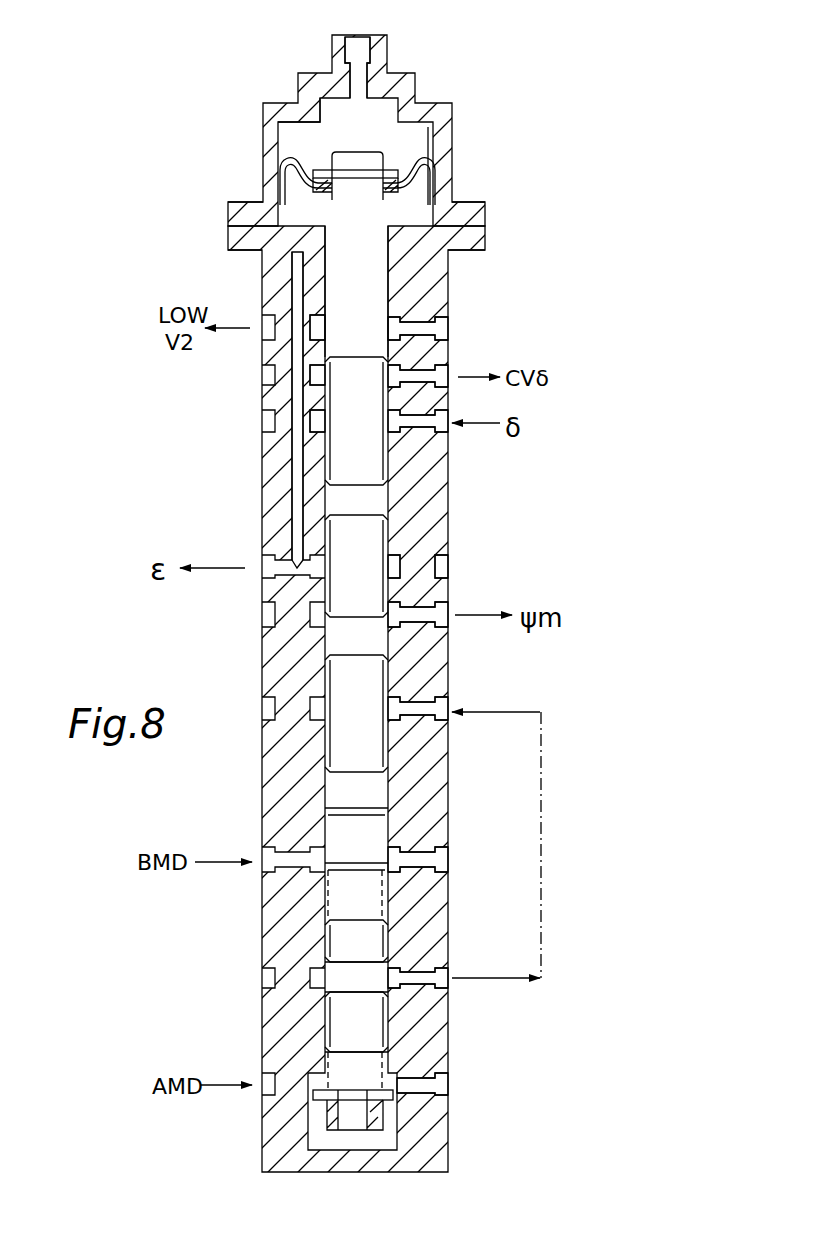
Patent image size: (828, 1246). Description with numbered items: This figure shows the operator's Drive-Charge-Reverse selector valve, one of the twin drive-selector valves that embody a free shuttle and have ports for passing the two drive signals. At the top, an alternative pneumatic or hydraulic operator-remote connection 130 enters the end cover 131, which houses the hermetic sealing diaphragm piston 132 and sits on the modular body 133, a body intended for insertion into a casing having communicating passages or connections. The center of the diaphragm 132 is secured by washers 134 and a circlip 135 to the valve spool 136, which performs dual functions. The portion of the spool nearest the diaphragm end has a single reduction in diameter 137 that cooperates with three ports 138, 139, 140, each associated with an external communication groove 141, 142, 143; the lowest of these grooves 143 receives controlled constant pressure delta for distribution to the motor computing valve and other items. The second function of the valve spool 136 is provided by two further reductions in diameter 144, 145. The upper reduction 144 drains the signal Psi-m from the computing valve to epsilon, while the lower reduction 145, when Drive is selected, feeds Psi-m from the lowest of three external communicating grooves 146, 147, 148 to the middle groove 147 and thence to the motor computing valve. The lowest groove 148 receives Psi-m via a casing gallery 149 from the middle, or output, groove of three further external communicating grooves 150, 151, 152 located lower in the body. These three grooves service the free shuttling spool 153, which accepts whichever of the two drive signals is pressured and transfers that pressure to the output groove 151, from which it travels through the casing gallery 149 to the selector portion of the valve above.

The operator-remote connection 130 is at (355, 45).
The end cover 131 is at (405, 92).
The hermetic sealing diaphragm piston 132 is at (428, 160).
The modular body 133 is at (432, 273).
The washers 134 is at (320, 197).
The circlip 135 is at (325, 85).
The valve spool 136 is at (345, 237).
The single reduction in diameter 137 is at (330, 456).
The port 138 is at (318, 322).
The port 139 is at (316, 376).
The port 140 is at (312, 420).
The external communication groove 141 is at (440, 330).
The external communication groove 142 is at (442, 378).
The external communication groove 143 is at (450, 418).
The upper reduction in diameter 144 is at (387, 523).
The lower reduction in diameter 145 is at (388, 668).
The external communicating groove 146 is at (448, 563).
The middle groove 147 is at (442, 608).
The lowest groove 148 is at (445, 706).
The casing gallery 149 is at (542, 852).
The external communicating groove 150 is at (445, 858).
The output groove 151 is at (448, 972).
The external communicating groove 152 is at (448, 1090).
The free shuttling spool 153 is at (340, 1028).